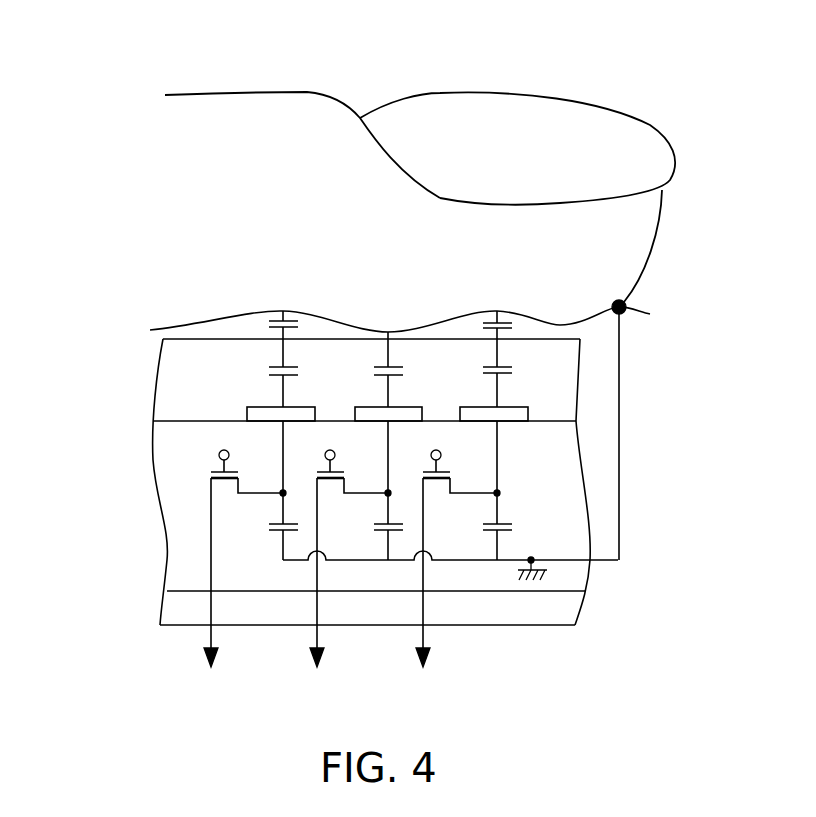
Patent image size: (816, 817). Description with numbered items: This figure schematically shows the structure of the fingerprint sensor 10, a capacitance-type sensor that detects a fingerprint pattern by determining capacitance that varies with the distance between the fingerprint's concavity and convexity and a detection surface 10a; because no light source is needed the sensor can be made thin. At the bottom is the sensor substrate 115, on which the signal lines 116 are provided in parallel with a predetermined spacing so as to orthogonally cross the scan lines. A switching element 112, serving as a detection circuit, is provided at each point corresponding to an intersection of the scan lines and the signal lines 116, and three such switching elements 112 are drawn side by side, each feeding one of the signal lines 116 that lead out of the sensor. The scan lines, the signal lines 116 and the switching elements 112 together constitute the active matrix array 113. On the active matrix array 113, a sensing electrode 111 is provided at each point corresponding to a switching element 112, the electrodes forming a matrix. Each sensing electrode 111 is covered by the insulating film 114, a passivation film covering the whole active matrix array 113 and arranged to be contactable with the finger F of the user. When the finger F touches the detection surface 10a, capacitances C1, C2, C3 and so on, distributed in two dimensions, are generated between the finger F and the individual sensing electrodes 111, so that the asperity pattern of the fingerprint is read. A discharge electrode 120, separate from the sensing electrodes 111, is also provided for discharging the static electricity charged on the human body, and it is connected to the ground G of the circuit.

The finger F is at (313, 112).
The fingerprint sensor 10 is at (676, 372).
The detection surface 10a is at (212, 339).
The insulating film 114 is at (327, 468).
The active matrix array 113 is at (321, 519).
The sensing electrode 111 is at (248, 408).
The switching element 112 is at (354, 534).
The sensor substrate 115 is at (172, 607).
The signal lines 116 is at (423, 635).
The discharge electrode 120 is at (626, 306).
The capacitance C1 is at (407, 373).
The capacitance C2 is at (297, 325).
The capacitance C3 is at (511, 325).
The ground G is at (543, 574).